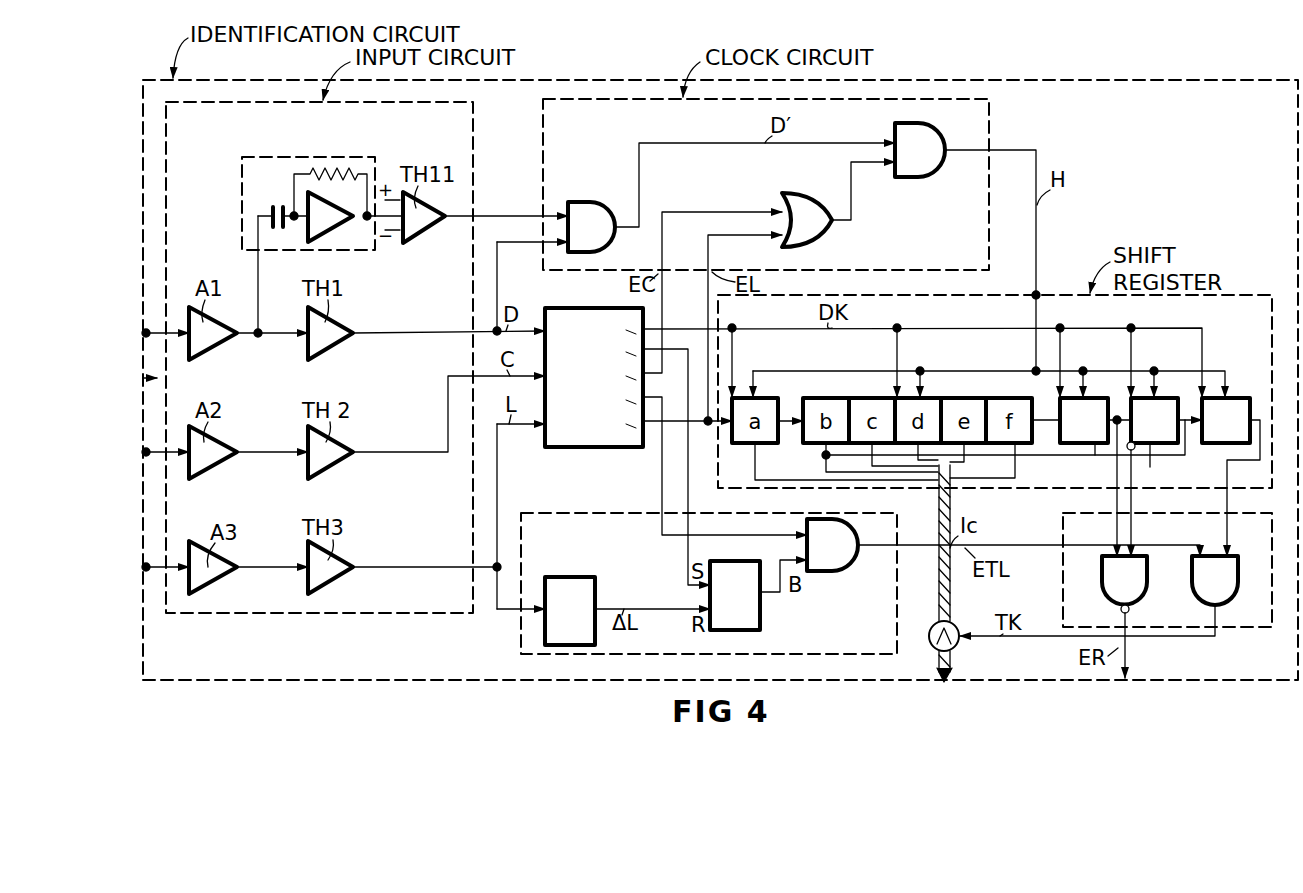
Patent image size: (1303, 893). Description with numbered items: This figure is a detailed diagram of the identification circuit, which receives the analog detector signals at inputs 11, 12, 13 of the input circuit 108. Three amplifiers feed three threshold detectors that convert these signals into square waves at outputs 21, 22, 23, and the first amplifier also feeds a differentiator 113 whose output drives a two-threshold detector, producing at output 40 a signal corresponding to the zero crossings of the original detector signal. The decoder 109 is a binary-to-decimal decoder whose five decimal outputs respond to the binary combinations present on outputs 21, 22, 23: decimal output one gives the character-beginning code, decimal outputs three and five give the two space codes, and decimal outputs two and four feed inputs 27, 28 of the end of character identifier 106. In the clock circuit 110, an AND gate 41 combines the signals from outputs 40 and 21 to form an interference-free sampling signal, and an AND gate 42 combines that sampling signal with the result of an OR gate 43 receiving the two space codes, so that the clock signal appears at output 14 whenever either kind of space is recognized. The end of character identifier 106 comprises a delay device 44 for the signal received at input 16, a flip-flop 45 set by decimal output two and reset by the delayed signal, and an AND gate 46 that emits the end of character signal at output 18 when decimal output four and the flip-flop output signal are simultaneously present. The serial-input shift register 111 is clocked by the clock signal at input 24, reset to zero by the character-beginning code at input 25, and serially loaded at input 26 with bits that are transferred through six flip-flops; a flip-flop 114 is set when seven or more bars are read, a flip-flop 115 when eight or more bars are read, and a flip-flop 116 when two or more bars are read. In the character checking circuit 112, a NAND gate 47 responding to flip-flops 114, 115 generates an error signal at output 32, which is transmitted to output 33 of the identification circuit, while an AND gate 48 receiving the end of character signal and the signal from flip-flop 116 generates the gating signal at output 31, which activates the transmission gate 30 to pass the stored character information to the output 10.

The output of identification circuit 10 is at (932, 678).
The input of identification circuit 11 is at (151, 334).
The input of identification circuit 12 is at (151, 453).
The input of identification circuit 13 is at (151, 568).
The output of clock circuit 14 is at (989, 152).
The input of end of character identifier 16 is at (512, 609).
The output of end of character identifier 18 is at (900, 545).
The output of input circuit 21 is at (473, 331).
The output of input circuit 22 is at (473, 376).
The output of input circuit 23 is at (473, 567).
The input of shift register 24 is at (1036, 300).
The input of shift register 25 is at (730, 325).
The input of shift register 26 is at (720, 428).
The input of end of character identifier 27 is at (688, 513).
The input of end of character identifier 28 is at (662, 513).
The transmission gate 30 is at (929, 636).
The output of character checking circuit 31 is at (1220, 630).
The output of character checking circuit 32 is at (1126, 625).
The output of identification circuit 33 is at (1127, 675).
The output of input circuit 40 is at (476, 216).
The AND gate 41 is at (590, 222).
The AND gate 42 is at (918, 145).
The OR gate 43 is at (812, 215).
The delay device 44 is at (566, 577).
The flip-flop 45 is at (760, 625).
The AND gate 46 is at (828, 562).
The NAND gate 47 is at (1110, 580).
The AND gate 48 is at (1226, 570).
The end of character identifier 106 is at (575, 510).
The input circuit 108 is at (473, 140).
The decoder 109 is at (600, 308).
The clock circuit 110 is at (543, 122).
The shift register 111 is at (1272, 290).
The character checking circuit 112 is at (1063, 513).
The differentiator 113 is at (375, 157).
The flip-flop 114 is at (1095, 460).
The flip-flop 115 is at (1150, 465).
The flip-flop 116 is at (1232, 397).